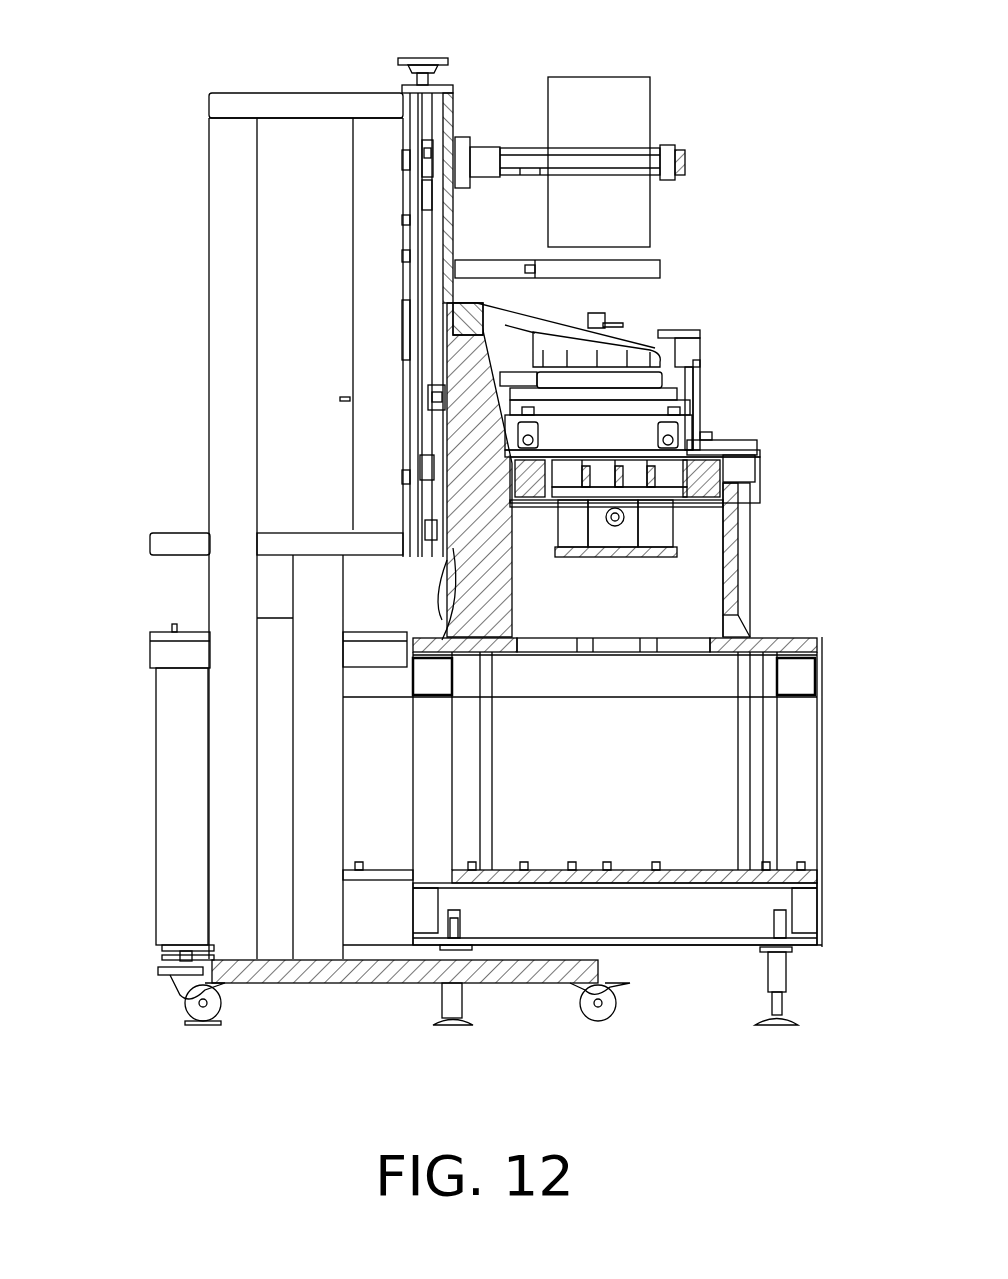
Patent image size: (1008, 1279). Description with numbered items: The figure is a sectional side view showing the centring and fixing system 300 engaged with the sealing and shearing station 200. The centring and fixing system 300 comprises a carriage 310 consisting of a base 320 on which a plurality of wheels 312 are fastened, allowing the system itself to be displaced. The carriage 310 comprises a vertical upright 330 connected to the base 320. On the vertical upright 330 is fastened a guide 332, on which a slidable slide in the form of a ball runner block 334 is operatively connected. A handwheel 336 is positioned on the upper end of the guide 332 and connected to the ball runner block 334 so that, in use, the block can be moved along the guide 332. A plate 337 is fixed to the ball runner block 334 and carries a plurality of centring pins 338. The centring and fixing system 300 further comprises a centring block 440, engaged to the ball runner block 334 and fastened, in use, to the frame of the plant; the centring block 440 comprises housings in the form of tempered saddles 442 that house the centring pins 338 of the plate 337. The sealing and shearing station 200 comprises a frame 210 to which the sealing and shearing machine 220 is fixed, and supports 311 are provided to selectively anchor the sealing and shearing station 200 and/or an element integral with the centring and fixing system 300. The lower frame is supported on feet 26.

The centring and fixing system 300 is at (158, 172).
The vertical upright 330 is at (366, 246).
The carriage 310 is at (141, 792).
The guide 332 is at (415, 196).
The ball runner block 334 is at (432, 158).
The handwheel 336 is at (418, 68).
The plate 337 is at (450, 240).
The centring pins 338 is at (470, 400).
The centring block 440 is at (515, 585).
The tempered saddles 442 is at (490, 360).
The sealing and shearing station 200 is at (732, 362).
The sealing and shearing machine 220 is at (678, 420).
The supports 311 is at (760, 462).
The frame 210 is at (734, 603).
The feet 26 is at (782, 997).
The base 320 is at (278, 984).
The wheels 312 is at (603, 1010).